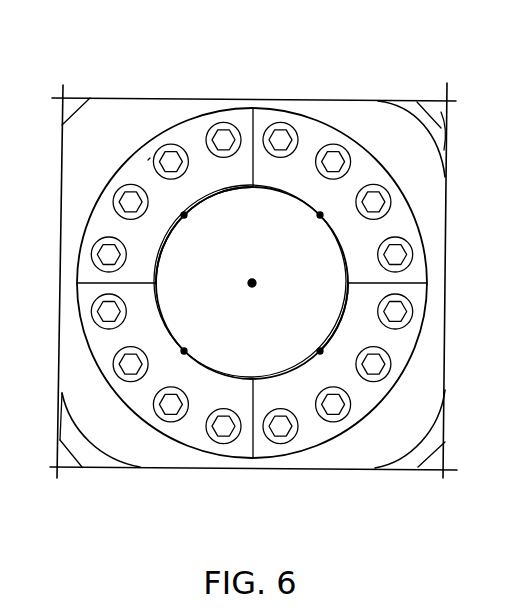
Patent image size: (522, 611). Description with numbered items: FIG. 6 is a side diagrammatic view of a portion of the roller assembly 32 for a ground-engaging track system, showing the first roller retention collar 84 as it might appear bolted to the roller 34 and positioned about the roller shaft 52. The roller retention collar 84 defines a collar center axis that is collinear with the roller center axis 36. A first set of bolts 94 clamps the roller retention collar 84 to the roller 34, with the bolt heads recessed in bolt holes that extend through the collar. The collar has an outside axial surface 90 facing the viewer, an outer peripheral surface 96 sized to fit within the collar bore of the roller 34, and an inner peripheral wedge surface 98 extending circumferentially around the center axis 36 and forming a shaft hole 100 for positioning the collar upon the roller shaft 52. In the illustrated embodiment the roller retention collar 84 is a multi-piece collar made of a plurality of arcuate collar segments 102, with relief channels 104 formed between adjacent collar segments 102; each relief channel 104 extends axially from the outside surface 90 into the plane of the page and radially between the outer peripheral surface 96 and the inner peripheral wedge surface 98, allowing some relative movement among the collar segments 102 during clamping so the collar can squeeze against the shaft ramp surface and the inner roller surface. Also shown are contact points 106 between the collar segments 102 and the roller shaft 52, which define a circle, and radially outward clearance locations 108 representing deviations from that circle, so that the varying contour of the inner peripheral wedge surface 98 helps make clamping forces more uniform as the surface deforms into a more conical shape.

The roller assembly 32 is at (408, 72).
The roller 34 is at (444, 107).
The center axis 36 is at (250, 290).
The roller shaft 52 is at (329, 324).
The first roller retention collar 84 is at (101, 193).
The outside axial surface 90 is at (404, 213).
The first set of bolts 94 is at (218, 123).
The outer peripheral surface 96 is at (150, 158).
The inner peripheral wedge surface 98 is at (210, 197).
The shaft hole 100 is at (285, 271).
The arcuate collar segments 102 is at (177, 131).
The relief channels 104 is at (253, 120).
The contact points 106 is at (180, 210).
The clearance locations 108 is at (157, 263).